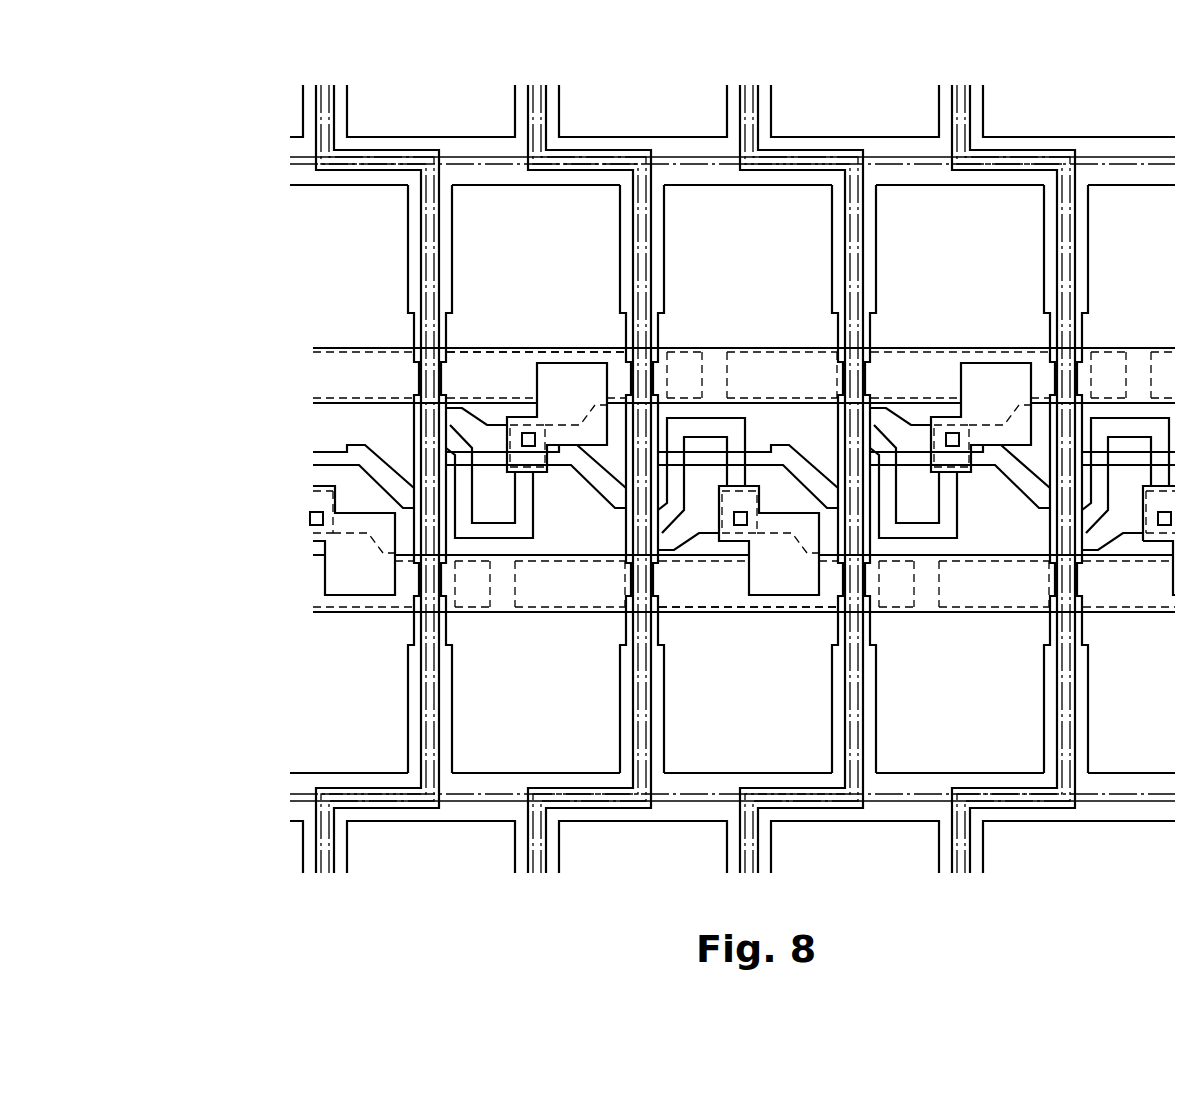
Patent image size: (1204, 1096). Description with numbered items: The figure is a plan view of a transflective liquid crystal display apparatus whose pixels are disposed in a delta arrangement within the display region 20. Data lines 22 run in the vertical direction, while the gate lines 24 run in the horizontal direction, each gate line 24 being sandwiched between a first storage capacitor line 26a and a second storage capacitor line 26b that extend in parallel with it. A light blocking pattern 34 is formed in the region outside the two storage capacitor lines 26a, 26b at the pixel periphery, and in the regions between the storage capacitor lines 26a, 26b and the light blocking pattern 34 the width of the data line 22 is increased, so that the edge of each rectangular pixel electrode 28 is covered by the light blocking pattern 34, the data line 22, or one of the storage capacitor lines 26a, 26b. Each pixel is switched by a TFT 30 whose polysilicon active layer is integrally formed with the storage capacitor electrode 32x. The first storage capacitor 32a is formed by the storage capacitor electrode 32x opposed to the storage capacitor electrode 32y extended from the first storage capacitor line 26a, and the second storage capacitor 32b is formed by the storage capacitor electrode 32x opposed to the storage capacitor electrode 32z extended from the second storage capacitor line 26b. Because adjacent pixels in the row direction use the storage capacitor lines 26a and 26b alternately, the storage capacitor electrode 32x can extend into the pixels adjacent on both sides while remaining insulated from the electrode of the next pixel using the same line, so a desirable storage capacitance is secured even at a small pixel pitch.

The display region 20 is at (340, 853).
The data line 22 is at (317, 117).
The gate line 24 is at (317, 456).
The first storage capacitor line 26a is at (317, 373).
The second storage capacitor line 26b is at (317, 585).
The pixel electrode 28 is at (472, 152).
The TFT 30 is at (490, 472).
The first storage capacitor 32a is at (605, 292).
The second storage capacitor 32b is at (750, 668).
The storage capacitor electrode 32x is at (565, 355).
The storage capacitor electrode 32y is at (600, 348).
The storage capacitor electrode 32z is at (746, 620).
The light blocking pattern 34 is at (678, 148).